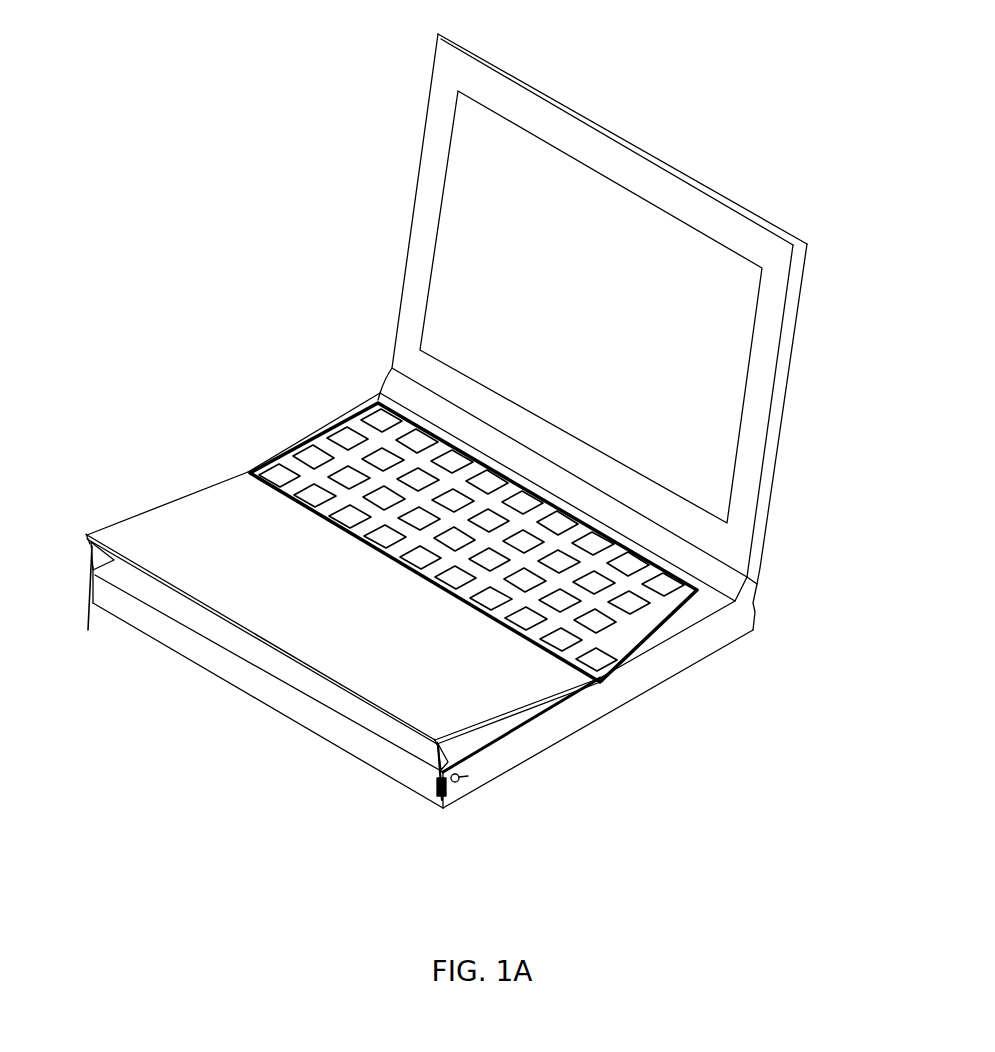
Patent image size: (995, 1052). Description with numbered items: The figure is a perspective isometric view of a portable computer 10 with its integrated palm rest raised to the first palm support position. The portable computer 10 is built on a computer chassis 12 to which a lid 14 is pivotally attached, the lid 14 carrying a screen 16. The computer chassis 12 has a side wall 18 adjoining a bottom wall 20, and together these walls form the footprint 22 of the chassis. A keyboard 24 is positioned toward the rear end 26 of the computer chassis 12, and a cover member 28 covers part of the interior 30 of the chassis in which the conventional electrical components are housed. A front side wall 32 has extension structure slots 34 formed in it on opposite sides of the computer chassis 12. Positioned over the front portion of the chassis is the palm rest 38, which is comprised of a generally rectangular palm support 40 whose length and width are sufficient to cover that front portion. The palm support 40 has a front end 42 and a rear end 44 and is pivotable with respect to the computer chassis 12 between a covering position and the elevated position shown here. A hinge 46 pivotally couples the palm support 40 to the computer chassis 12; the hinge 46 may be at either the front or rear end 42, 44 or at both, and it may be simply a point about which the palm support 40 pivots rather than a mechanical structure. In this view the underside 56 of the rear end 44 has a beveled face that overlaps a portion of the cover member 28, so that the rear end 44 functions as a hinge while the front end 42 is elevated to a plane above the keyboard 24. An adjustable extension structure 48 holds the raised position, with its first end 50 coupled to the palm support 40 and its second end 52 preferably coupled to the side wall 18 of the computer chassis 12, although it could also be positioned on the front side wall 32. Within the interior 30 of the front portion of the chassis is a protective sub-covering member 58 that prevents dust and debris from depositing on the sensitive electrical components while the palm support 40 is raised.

The portable computer 10 is at (258, 52).
The computer chassis 12 is at (764, 612).
The lid 14 is at (782, 442).
The screen 16 is at (667, 244).
The side wall 18 is at (693, 653).
The bottom wall 20 is at (602, 722).
The footprint 22 is at (320, 750).
The keyboard 24 is at (348, 437).
The rear end 26 is at (371, 366).
The cover member 28 is at (705, 607).
The interior 30 is at (478, 742).
The front side wall 32 is at (245, 693).
The extension structure slots 34 is at (90, 600).
The palm rest 38 is at (200, 463).
The palm support 40 is at (140, 525).
The front end 42 is at (223, 597).
The rear end 44 is at (256, 490).
The hinge 46 is at (613, 681).
The adjustable extension structure 48 is at (123, 553).
The first end 50 is at (92, 548).
The second end 52 is at (442, 797).
The underside 56 is at (557, 705).
The protective sub-covering member 58 is at (310, 678).